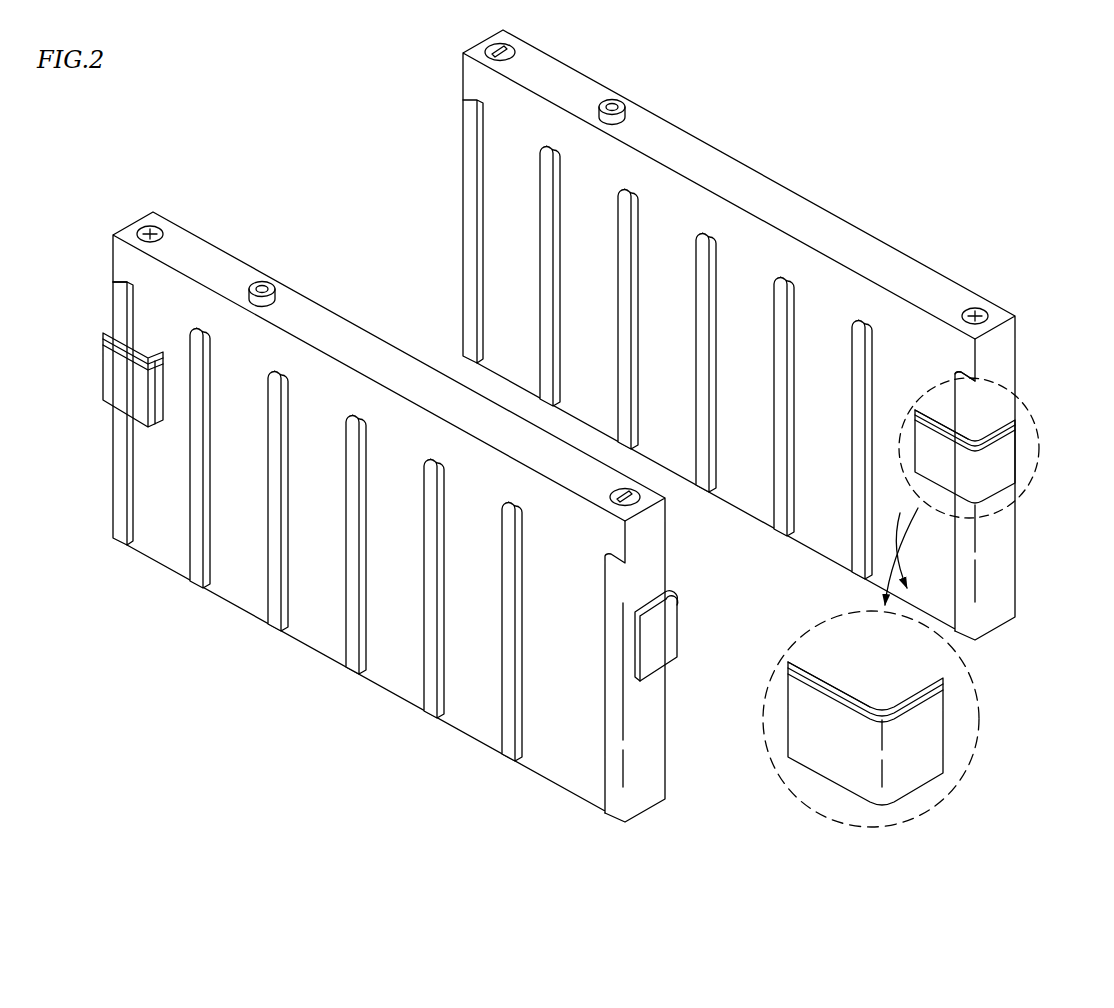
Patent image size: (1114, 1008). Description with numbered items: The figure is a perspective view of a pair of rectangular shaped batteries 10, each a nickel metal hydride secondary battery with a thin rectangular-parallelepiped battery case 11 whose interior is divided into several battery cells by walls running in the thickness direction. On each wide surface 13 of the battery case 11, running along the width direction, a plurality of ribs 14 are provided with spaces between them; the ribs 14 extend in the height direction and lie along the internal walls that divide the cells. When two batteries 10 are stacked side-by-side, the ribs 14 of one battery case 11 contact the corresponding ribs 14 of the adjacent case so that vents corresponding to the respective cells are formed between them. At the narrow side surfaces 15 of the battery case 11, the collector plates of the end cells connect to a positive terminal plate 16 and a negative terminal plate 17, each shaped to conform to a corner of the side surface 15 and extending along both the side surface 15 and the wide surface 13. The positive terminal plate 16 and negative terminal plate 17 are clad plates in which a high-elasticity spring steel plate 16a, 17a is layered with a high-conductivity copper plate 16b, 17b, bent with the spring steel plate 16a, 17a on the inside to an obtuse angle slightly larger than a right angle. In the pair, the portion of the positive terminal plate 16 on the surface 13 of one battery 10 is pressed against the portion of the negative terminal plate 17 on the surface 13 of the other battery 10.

The rectangular shaped battery 10 is at (387, 305).
The battery case 11 is at (437, 385).
The surface along width direction 13 is at (320, 380).
The rib 14 is at (123, 527).
The side surface 15 is at (650, 758).
The positive terminal plate 16 is at (96, 348).
The spring steel plate 16a is at (138, 328).
The copper plate 16b is at (103, 333).
The negative terminal plate 17 is at (667, 632).
The spring steel plate 17a is at (642, 612).
The copper plate 17b is at (663, 586).